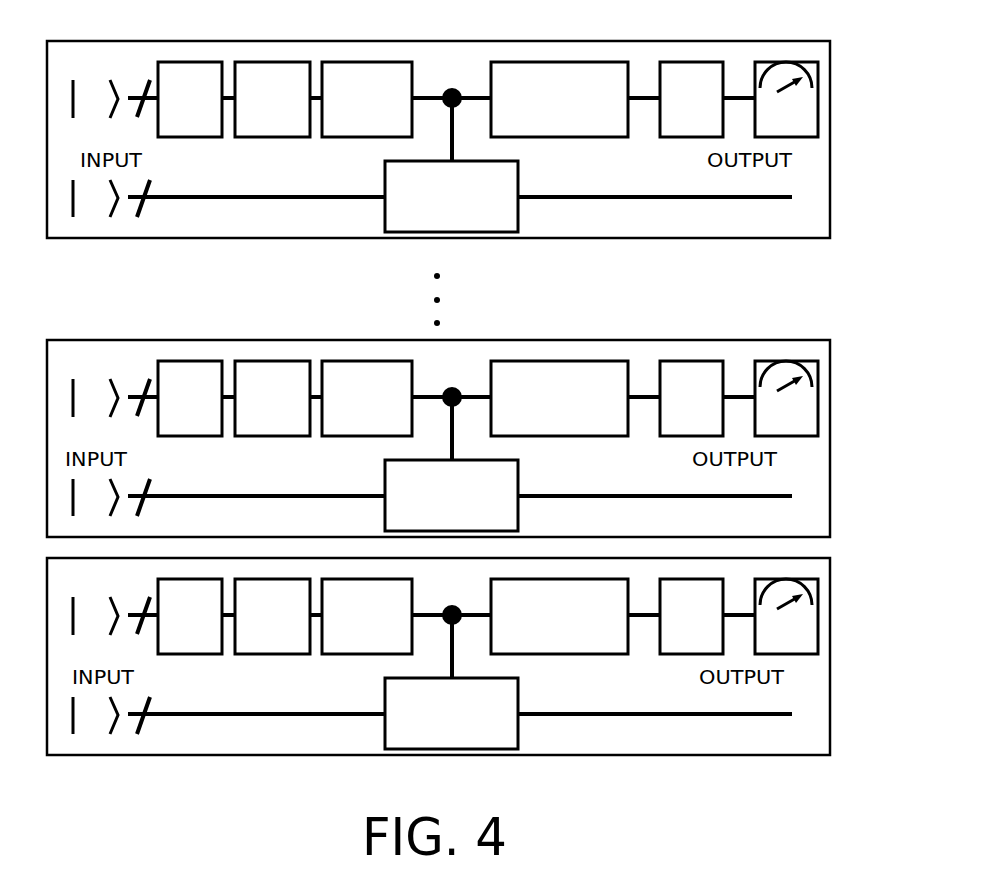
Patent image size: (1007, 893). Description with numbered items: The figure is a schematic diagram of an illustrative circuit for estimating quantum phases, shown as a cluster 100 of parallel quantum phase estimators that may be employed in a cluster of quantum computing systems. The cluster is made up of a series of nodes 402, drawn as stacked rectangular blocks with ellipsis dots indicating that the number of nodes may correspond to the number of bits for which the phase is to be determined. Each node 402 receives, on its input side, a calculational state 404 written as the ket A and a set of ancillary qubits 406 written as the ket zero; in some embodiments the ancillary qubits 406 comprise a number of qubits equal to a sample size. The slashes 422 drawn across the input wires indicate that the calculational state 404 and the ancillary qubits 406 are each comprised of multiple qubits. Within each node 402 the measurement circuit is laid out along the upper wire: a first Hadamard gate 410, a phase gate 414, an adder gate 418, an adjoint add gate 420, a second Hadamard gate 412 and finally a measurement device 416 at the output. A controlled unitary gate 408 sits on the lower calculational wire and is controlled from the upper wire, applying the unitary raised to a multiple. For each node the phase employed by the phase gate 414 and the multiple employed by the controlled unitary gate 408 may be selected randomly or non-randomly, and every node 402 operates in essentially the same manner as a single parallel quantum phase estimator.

The quantum circuit system 100 is at (764, 30).
The node 402 is at (823, 228).
The calculational state 404 is at (113, 233).
The ancillary qubits 406 is at (117, 138).
The controlled unitary gate 408 is at (433, 218).
The Hadamard gate 410 is at (173, 122).
The Hadamard gate 412 is at (675, 122).
The phase gate 414 is at (290, 122).
The measurement device 416 is at (768, 124).
The adder gate 418 is at (350, 122).
The adjoint add gate 420 is at (543, 134).
The slashes 422 is at (140, 76).